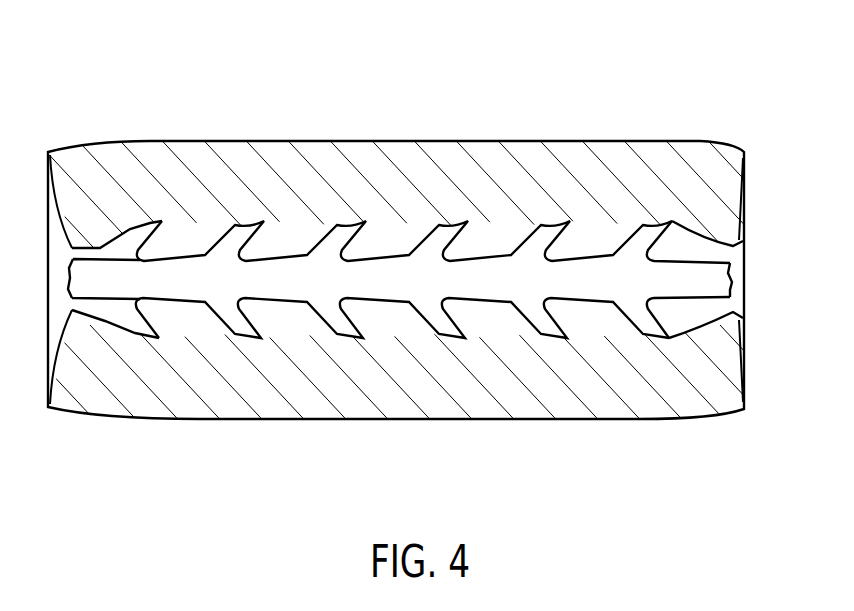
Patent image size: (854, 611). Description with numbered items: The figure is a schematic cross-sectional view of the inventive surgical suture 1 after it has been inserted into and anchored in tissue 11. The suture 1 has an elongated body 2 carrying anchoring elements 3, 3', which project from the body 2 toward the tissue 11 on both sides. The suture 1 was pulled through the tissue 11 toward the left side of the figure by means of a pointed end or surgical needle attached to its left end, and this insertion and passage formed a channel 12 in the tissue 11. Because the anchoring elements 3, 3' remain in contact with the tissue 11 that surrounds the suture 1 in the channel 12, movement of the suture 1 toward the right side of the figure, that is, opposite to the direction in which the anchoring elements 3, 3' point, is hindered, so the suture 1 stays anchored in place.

The tissue 11 is at (432, 200).
The channel 12 is at (172, 248).
The surgical suture 1 is at (583, 278).
The elongated body 2 is at (657, 275).
The anchoring element 3 is at (695, 175).
The anchoring element 3' is at (695, 386).